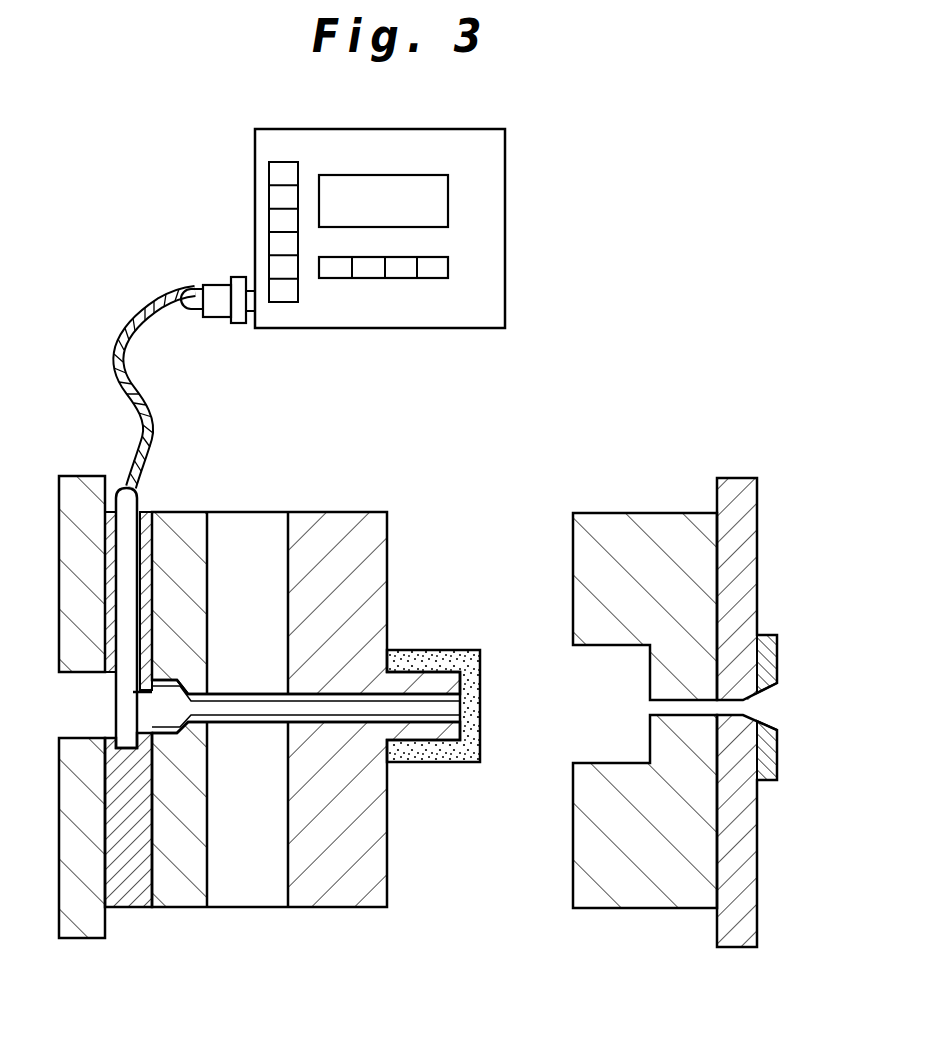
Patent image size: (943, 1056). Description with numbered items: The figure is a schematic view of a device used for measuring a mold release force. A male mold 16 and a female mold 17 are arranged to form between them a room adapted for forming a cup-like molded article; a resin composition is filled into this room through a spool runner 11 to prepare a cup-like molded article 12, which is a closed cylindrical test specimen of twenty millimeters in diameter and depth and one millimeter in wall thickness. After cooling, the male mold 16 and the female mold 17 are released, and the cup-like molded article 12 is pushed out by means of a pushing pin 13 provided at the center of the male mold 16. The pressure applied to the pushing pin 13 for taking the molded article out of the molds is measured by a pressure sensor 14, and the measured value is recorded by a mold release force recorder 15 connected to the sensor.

The spool runner 11 is at (757, 707).
The cup-like molded article 12 is at (447, 655).
The pushing pin 13 is at (266, 711).
The pressure sensor 14 is at (122, 400).
The mold release force recorder 15 is at (506, 213).
The male mold 16 is at (345, 525).
The female mold 17 is at (643, 522).